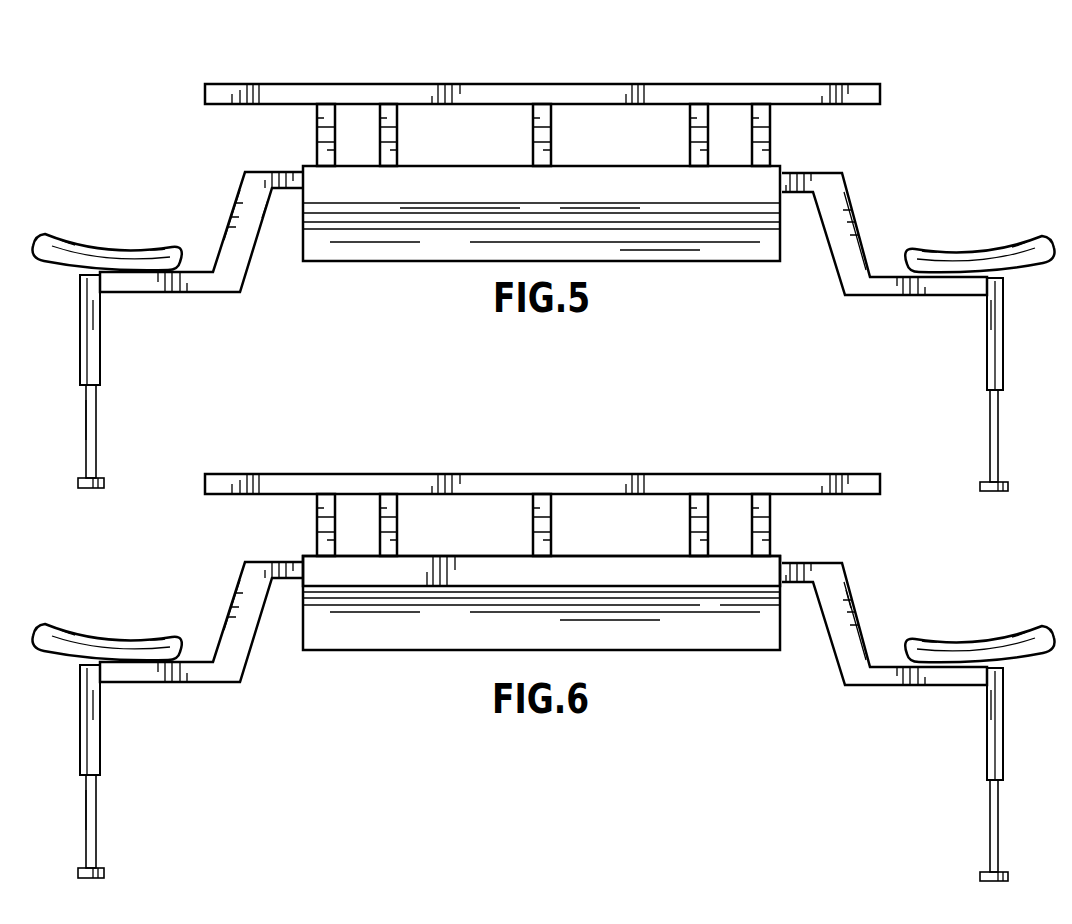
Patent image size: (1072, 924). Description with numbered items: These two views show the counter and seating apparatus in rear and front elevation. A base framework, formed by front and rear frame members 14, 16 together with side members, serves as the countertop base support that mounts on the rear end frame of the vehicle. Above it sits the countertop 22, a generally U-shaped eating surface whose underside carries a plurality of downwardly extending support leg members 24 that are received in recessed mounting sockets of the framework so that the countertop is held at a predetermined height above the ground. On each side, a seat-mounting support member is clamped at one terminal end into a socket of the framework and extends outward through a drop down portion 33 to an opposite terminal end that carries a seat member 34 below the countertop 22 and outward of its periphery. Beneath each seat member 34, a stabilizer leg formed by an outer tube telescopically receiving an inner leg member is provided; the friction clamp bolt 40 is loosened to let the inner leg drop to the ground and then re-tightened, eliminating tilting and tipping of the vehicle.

In FIG. 6, the front frame member 14 is at (541, 549).
In FIG. 5, the rear frame member 16 is at (495, 180).
In FIG. 6, the rear frame member 16 is at (541, 628).
In FIG. 5, the countertop 22 is at (733, 90).
In FIG. 6, the countertop 22 is at (542, 460).
In FIG. 5, the support leg member 24 is at (317, 128).
In FIG. 6, the support leg member 24 is at (544, 525).
In FIG. 5, the drop down portion 33 is at (260, 213).
In FIG. 6, the drop down portion 33 is at (882, 606).
In FIG. 6, the seat member 34 is at (979, 624).
In FIG. 5, the friction clamp bolt 40 is at (985, 252).